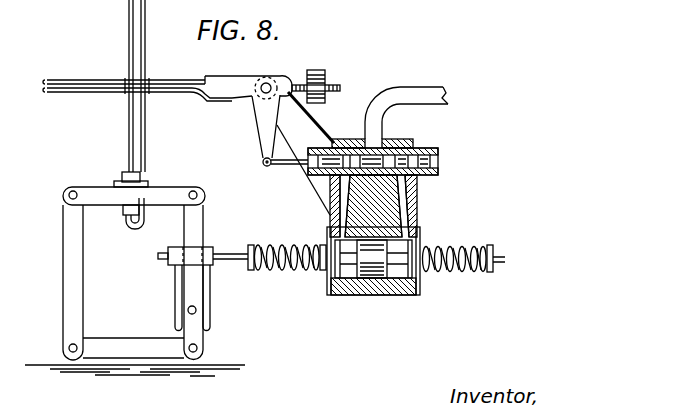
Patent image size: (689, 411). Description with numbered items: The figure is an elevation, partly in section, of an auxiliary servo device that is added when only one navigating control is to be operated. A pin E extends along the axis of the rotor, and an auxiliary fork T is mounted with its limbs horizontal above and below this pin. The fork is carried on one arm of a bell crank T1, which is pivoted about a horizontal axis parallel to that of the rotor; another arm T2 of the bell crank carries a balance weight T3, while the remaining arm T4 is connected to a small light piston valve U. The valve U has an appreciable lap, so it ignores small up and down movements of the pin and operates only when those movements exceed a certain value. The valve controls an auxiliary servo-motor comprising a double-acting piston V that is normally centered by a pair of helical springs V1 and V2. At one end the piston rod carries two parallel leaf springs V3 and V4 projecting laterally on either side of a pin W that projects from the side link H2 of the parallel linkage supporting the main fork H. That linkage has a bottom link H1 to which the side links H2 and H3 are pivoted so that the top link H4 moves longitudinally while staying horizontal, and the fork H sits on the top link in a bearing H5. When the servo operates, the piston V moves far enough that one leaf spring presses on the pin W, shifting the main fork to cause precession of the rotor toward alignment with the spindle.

The fork H is at (128, 17).
The bottom link H1 is at (131, 355).
The side link H2 is at (68, 287).
The side link H3 is at (205, 216).
The top link H4 is at (100, 192).
The bearing H5 is at (121, 178).
The pin E is at (130, 78).
The auxiliary fork T is at (75, 82).
The bell crank T1 is at (235, 86).
The arm T2 is at (292, 80).
The balance weight T3 is at (322, 72).
The arm T4 is at (262, 131).
The piston valve U is at (352, 150).
The double-acting piston V is at (371, 296).
The helical spring V1 is at (278, 273).
The helical spring V2 is at (462, 273).
The leaf spring V3 is at (175, 298).
The leaf spring V4 is at (211, 303).
The pin W is at (198, 313).